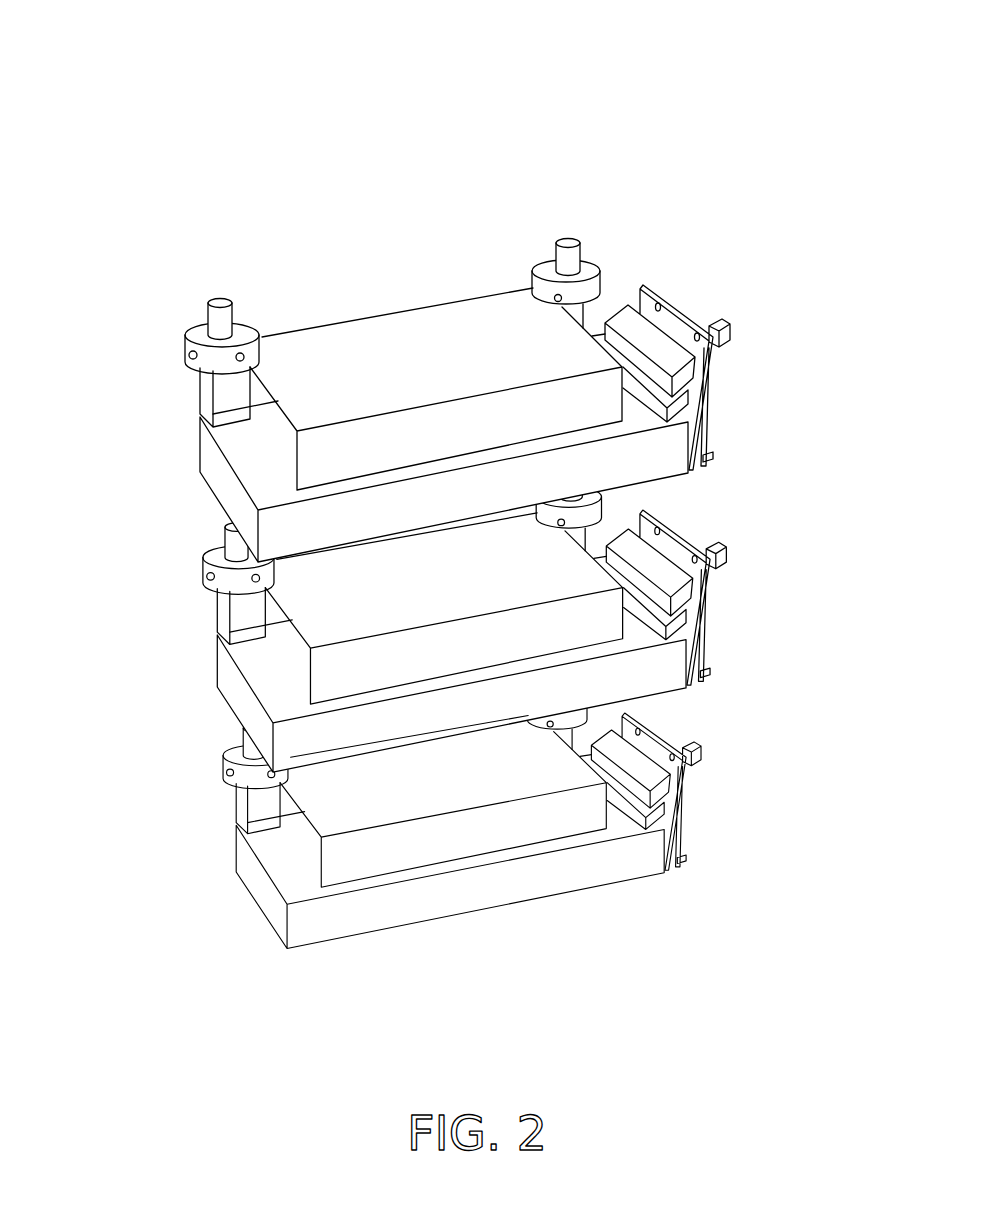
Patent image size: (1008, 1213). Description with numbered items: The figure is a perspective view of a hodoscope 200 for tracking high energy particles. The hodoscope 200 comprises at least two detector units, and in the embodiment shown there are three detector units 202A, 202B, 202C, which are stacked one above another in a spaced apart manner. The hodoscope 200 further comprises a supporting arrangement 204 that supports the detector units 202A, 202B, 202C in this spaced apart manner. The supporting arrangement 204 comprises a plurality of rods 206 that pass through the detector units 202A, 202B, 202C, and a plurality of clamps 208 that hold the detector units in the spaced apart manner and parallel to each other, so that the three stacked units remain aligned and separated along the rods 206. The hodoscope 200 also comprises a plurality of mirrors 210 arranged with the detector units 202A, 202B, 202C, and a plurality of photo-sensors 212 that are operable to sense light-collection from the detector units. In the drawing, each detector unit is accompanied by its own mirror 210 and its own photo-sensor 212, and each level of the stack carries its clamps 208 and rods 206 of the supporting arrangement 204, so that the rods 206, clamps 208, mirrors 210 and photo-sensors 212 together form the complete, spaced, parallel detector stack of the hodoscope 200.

The hodoscope 200 is at (459, 483).
The detector unit 202A is at (272, 405).
The detector unit 202B is at (290, 618).
The detector unit 202C is at (310, 833).
The supporting arrangement 204 is at (218, 283).
The rods 206 is at (232, 316).
The clamps 208 is at (600, 272).
The mirrors 210 is at (222, 482).
The photo-sensors 212 is at (712, 402).